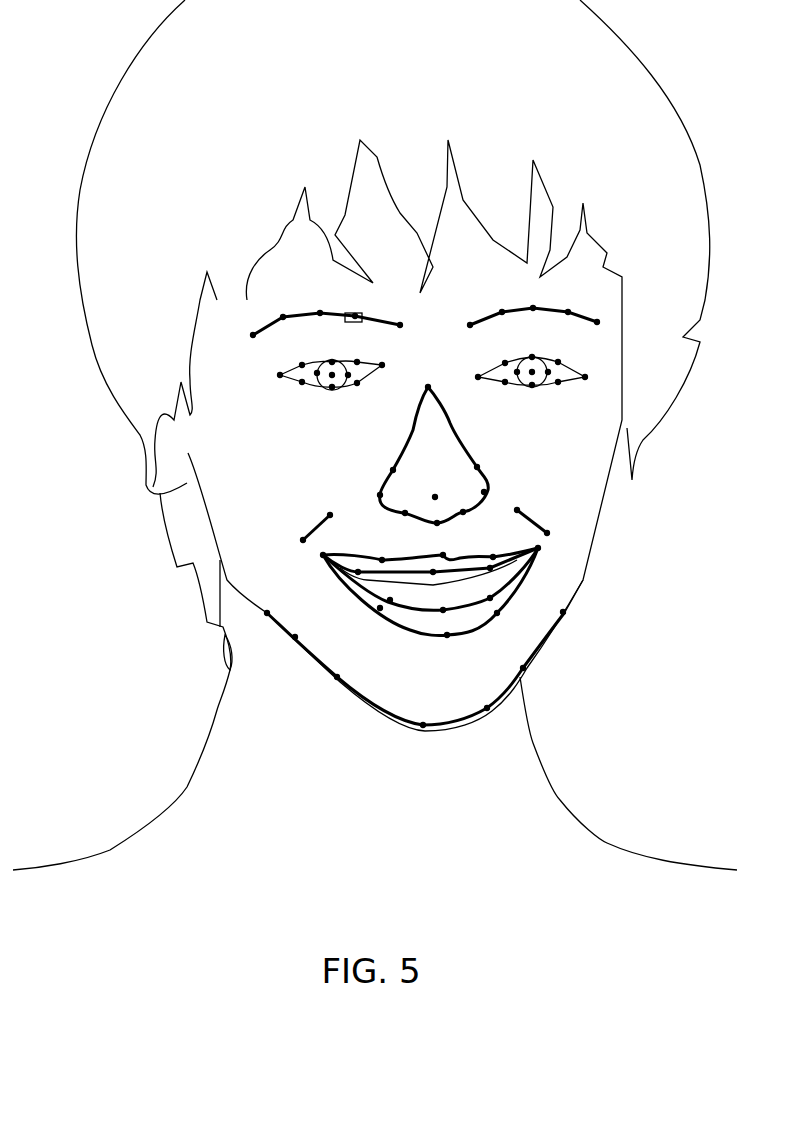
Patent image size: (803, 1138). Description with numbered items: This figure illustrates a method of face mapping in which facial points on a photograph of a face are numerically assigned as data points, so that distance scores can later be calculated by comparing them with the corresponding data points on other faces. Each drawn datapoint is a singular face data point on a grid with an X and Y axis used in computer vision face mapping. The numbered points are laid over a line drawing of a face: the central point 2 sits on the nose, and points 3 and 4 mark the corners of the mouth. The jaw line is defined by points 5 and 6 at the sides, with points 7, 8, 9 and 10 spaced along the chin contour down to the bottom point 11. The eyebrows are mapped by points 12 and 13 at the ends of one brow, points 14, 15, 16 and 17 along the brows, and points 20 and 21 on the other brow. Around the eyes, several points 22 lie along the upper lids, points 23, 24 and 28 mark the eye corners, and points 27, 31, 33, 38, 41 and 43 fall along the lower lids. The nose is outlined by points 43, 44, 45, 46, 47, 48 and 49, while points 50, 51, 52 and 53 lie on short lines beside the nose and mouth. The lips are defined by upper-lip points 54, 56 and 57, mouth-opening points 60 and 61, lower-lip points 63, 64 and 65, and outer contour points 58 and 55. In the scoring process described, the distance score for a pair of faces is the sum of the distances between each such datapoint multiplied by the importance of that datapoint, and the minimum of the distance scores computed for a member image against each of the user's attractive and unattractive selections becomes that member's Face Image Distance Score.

The nose center point 2 is at (435, 485).
The left mouth corner point 3 is at (318, 569).
The right mouth corner point 4 is at (544, 559).
The left jaw point 5 is at (263, 628).
The right jaw point 6 is at (568, 628).
The left jaw contour point 7 is at (291, 652).
The right jaw contour point 8 is at (529, 682).
The left chin contour point 9 is at (333, 691).
The right chin contour point 10 is at (492, 723).
The chin bottom point 11 is at (421, 740).
The left eyebrow outer end point 12 is at (247, 348).
The left eyebrow inner end point 13 is at (399, 314).
The eyebrow outer point 14 is at (376, 309).
The eyebrow inner point 15 is at (480, 310).
The left eyebrow middle point 16 is at (324, 303).
The right eyebrow middle point 17 is at (536, 296).
The right eyebrow outer point 20 is at (501, 301).
The right eyebrow inner point 21 is at (571, 301).
The facial feature point 22 is at (433, 360).
The eye outer corner point 23 is at (367, 382).
The left eye inner corner point 24 is at (387, 354).
The left eye lower middle point 27 is at (332, 399).
The right eye inner corner point 28 is at (599, 377).
The right eye lower middle point 31 is at (532, 398).
The left eye lower outer point 33 is at (301, 394).
The left eye lower inner point 38 is at (362, 394).
The right eye lower outer point 41 is at (504, 394).
The feature point 43 is at (468, 431).
The right nose side point 44 is at (489, 456).
The left nostril wing point 45 is at (368, 498).
The right nostril wing point 46 is at (472, 490).
The left nose base point 47 is at (401, 525).
The right nose base point 48 is at (475, 520).
The nose tip bottom point 49 is at (426, 533).
The left nasolabial line upper point 50 is at (323, 515).
The right nasolabial line upper point 51 is at (526, 509).
The left nasolabial line lower point 52 is at (287, 545).
The right nasolabial line lower point 53 is at (558, 535).
The upper lip center point 54 is at (451, 544).
The lower lip bottom point 55 is at (446, 647).
The upper lip left point 56 is at (379, 549).
The upper lip right point 57 is at (492, 545).
The lower lip outer contour point 58 is at (442, 618).
The mouth opening left point 60 is at (370, 573).
The mouth opening point 61 is at (449, 571).
The lower lip left point 63 is at (399, 600).
The lower lip center point 64 is at (442, 599).
The lower lip right point 65 is at (475, 592).